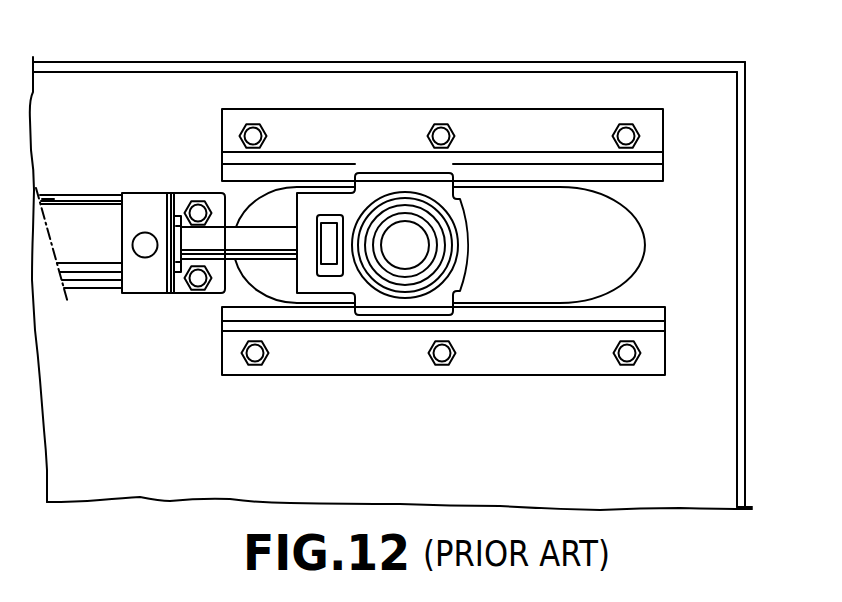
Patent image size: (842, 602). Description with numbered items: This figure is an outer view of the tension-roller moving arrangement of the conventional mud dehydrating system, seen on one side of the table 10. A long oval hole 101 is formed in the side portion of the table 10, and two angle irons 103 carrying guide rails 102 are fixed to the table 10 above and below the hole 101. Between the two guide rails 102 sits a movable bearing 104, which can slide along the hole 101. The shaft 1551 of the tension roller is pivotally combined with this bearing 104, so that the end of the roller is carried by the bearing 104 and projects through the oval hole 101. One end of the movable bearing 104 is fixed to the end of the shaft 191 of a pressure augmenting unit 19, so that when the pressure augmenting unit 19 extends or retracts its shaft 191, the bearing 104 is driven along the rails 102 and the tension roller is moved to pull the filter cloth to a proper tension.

The table 10 is at (700, 461).
The pressure augmenting unit 19 is at (100, 187).
The shaft of pressure augmenting unit 191 is at (197, 243).
The long oval hole 101 is at (639, 266).
The guide rail 102 is at (652, 173).
The angle iron 103 is at (650, 147).
The movable bearing 104 is at (455, 255).
The shaft of tension roller 1551 is at (397, 250).